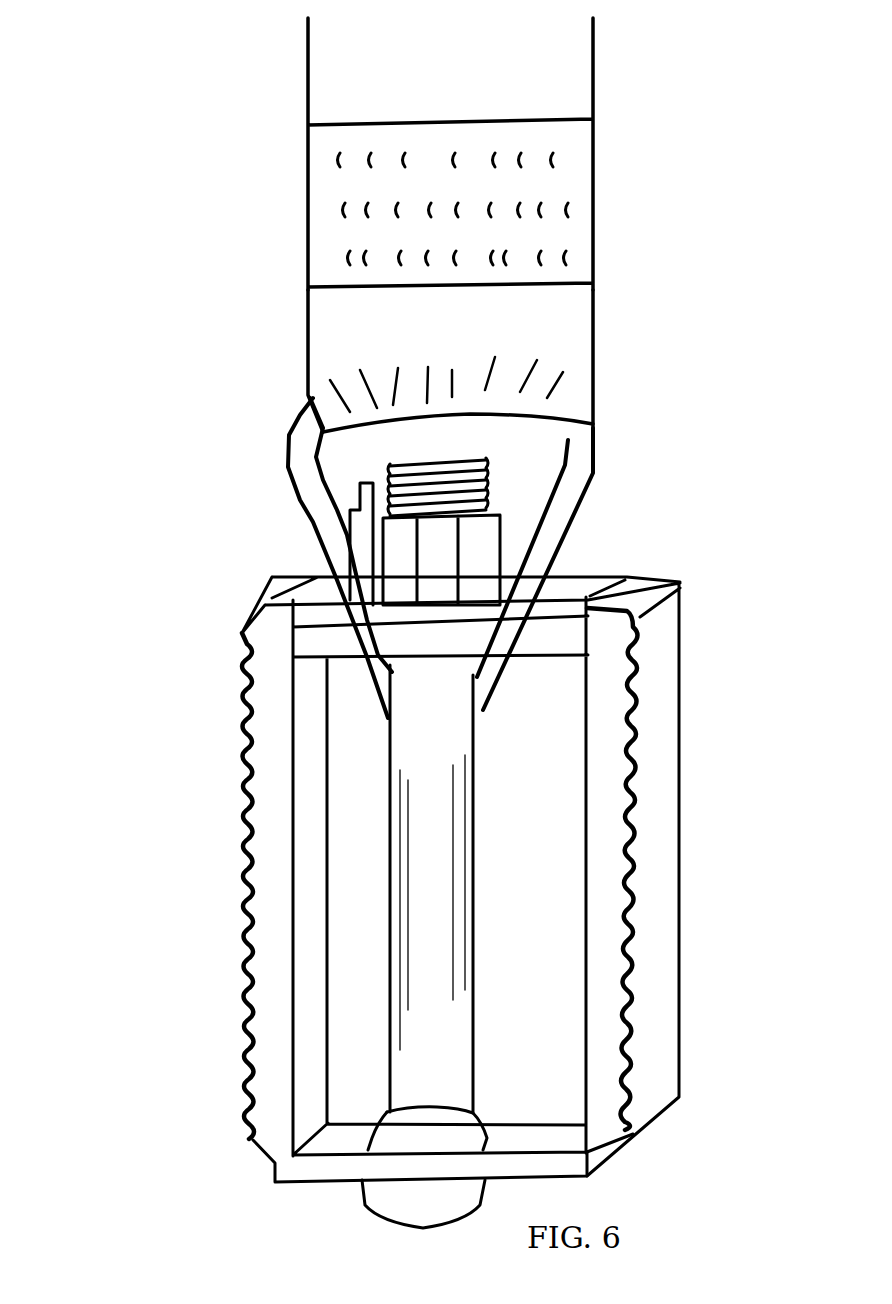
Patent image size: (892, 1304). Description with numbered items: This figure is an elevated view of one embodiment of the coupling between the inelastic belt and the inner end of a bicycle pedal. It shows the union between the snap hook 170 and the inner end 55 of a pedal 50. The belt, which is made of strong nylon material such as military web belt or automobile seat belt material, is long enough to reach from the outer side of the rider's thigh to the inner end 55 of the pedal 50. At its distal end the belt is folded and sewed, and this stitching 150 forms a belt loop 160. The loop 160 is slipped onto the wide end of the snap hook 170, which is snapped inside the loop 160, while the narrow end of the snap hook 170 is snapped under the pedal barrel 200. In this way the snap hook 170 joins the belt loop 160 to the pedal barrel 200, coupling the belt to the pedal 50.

The pedal 50 is at (192, 802).
The inner end of the pedal 55 is at (200, 642).
The stitching 150 is at (308, 232).
The belt loop 160 is at (593, 363).
The snap hook 170 is at (285, 467).
The pedal barrel 200 is at (450, 808).